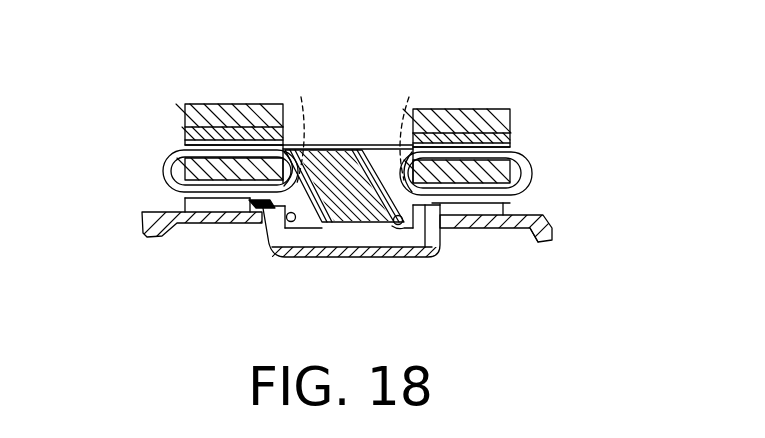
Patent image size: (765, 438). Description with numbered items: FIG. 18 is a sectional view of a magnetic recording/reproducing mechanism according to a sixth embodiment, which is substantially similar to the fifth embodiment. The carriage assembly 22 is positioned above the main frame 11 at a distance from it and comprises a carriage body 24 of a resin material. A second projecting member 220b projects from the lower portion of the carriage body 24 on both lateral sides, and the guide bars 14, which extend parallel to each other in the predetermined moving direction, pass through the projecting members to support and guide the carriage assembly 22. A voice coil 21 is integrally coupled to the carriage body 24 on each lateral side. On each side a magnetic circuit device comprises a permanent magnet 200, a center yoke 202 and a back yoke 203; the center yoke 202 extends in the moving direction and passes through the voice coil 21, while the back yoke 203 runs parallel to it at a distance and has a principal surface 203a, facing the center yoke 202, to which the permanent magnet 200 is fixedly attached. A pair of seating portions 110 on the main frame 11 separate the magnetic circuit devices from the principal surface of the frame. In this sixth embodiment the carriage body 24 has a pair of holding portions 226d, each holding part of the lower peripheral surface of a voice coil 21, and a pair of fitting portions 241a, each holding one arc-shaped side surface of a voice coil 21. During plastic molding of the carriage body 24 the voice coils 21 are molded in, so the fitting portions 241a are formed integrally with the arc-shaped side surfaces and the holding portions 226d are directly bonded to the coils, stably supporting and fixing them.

The main frame 11 is at (512, 231).
The guide bars 14 is at (372, 247).
The voice coil 21 is at (163, 181).
The carriage assembly 22 is at (365, 145).
The carriage body 24 is at (325, 146).
The seating portions 110 is at (481, 229).
The permanent magnet 200 is at (185, 131).
The center yoke 202 is at (178, 154).
The back yoke 203 is at (210, 108).
The principal surface 203a is at (268, 128).
The second projecting member 220b is at (283, 254).
The holding portions 226d is at (236, 229).
The fitting portions 241a is at (368, 133).